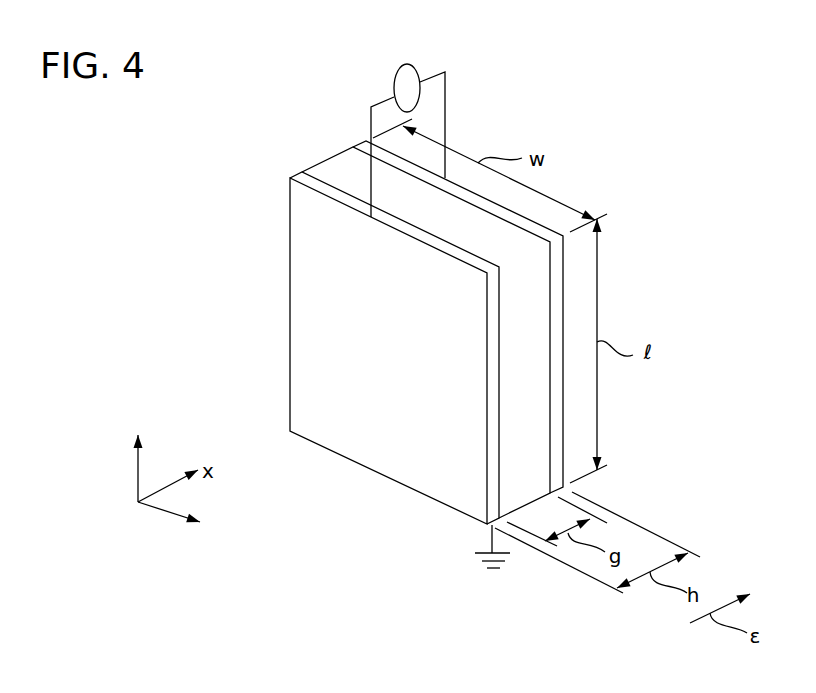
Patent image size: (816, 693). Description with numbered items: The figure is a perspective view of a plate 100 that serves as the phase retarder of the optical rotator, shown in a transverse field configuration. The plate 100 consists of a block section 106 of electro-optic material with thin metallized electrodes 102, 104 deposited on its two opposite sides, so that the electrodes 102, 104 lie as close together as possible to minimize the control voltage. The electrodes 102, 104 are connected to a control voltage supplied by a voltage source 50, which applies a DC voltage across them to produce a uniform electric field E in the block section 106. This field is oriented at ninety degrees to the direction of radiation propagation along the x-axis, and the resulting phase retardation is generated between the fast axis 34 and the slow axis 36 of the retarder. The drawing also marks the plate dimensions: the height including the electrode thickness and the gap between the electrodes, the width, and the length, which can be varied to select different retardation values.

The plate 100 is at (602, 150).
The metallized electrode 102 is at (367, 145).
The metallized electrode 104 is at (312, 232).
The block section 106 is at (323, 170).
The voltage source 50 is at (413, 68).
The fast axis 34 is at (145, 507).
The slow axis 36 is at (135, 477).